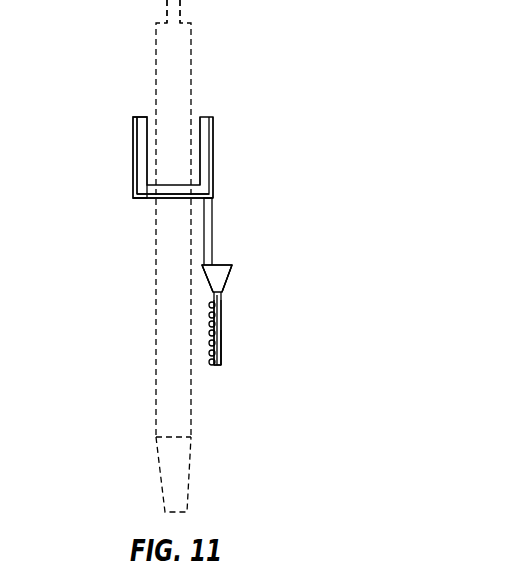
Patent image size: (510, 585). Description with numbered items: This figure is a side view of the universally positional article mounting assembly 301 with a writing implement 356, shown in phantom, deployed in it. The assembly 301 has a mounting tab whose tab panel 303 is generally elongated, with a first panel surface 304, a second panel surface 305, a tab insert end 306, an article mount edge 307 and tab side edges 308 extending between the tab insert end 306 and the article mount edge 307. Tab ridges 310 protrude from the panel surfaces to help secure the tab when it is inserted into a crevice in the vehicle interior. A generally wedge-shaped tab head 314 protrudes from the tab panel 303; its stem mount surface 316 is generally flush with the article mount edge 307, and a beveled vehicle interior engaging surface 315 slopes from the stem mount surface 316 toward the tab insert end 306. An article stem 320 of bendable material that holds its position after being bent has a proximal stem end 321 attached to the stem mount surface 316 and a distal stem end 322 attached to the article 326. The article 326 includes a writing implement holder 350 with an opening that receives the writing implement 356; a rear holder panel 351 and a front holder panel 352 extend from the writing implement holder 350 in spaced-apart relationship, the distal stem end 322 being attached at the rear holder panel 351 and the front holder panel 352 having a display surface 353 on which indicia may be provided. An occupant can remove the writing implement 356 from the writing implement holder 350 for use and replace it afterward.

The article mounting assembly 301 is at (87, 47).
The writing implement 356 is at (170, 82).
The display surface 353 is at (133, 122).
The front holder panel 352 is at (141, 155).
The rear holder panel 351 is at (213, 168).
The article 326 is at (215, 148).
The distal stem end 322 is at (214, 200).
The writing implement holder 350 is at (165, 196).
The article stem 320 is at (213, 230).
The stem mount surface 316 is at (202, 265).
The proximal stem end 321 is at (232, 265).
The vehicle interior engaging surface 315 is at (200, 279).
The tab head 314 is at (195, 287).
The article mount edge 307 is at (235, 272).
The tab panel 303 is at (228, 317).
The second panel surface 305 is at (222, 326).
The tab side edges 308 is at (222, 350).
The tab insert end 306 is at (222, 366).
The tab ridges 310 is at (211, 313).
The first panel surface 304 is at (210, 361).